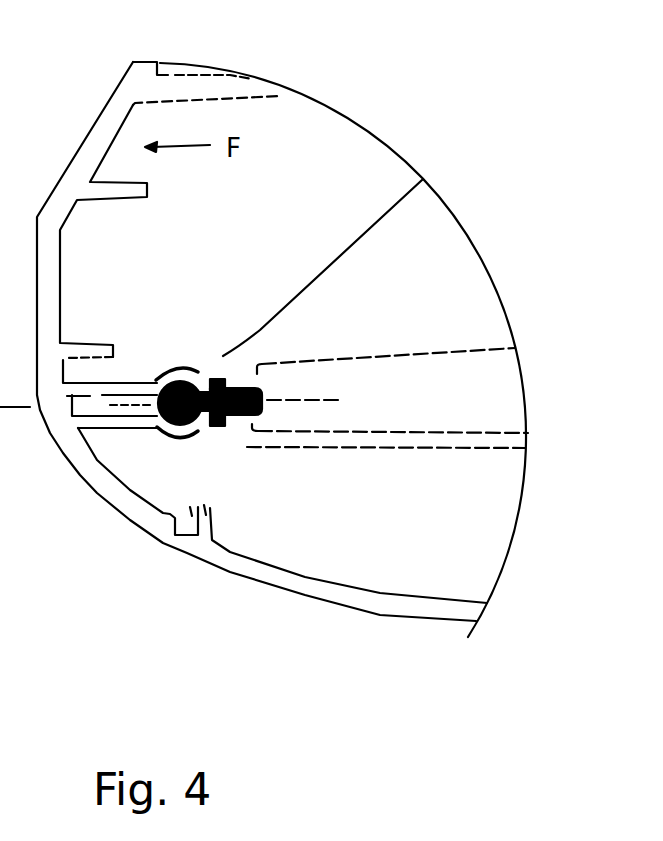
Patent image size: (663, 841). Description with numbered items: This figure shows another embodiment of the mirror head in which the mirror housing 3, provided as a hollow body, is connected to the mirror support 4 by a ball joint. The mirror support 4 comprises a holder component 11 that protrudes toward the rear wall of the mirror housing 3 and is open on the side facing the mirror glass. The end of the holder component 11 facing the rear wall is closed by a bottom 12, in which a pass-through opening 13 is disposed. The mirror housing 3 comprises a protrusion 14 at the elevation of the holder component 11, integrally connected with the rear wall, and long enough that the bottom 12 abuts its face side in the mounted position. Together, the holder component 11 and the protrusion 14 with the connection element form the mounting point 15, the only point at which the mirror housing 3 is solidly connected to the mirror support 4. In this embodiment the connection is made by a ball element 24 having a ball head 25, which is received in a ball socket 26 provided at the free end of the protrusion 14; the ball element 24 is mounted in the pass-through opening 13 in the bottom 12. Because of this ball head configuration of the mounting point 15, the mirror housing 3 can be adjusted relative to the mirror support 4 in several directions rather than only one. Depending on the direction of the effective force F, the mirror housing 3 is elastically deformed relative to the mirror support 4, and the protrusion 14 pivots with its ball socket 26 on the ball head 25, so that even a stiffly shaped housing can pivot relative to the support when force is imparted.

The mirror housing 3 is at (115, 108).
The mirror support 4 is at (365, 317).
The holder component 11 is at (383, 453).
The bottom 12 is at (232, 428).
The pass-through opening 13 is at (243, 373).
The protrusion 14 is at (103, 424).
The mounting point 15 is at (175, 450).
The ball element 24 is at (206, 364).
The ball head 25 is at (158, 430).
The ball socket 26 is at (170, 368).